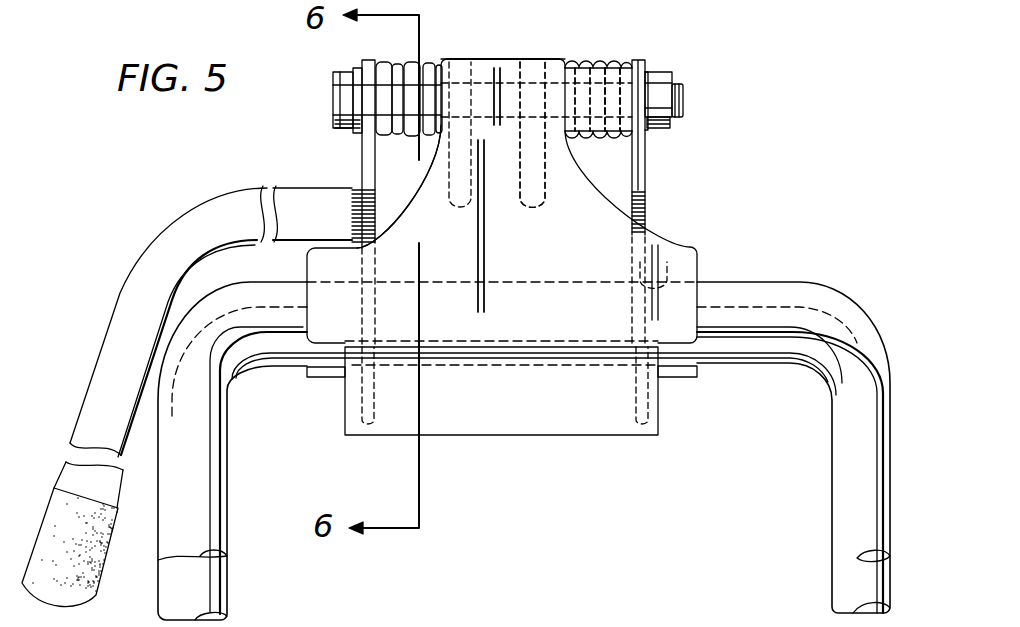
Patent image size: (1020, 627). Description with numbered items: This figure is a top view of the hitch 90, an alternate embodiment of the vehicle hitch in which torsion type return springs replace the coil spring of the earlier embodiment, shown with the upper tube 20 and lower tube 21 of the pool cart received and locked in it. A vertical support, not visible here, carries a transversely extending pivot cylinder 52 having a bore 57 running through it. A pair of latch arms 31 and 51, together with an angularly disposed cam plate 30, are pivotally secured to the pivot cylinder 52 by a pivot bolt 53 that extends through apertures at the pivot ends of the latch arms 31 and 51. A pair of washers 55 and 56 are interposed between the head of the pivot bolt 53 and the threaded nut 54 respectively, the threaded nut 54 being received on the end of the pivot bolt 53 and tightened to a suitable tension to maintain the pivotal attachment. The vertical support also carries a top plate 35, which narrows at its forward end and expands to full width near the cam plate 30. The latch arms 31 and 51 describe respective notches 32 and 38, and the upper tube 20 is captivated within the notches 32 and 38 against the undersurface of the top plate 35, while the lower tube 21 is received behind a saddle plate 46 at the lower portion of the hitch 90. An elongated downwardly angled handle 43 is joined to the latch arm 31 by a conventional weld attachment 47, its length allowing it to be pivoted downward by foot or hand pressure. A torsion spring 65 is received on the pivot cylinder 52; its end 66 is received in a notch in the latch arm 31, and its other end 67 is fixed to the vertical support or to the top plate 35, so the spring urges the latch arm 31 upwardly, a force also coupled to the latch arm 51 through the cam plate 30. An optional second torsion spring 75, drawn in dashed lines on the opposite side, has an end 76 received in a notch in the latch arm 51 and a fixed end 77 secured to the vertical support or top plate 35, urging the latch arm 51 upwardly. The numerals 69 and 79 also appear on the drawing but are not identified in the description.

The upper tube 20 is at (847, 478).
The lower tube 21 is at (847, 573).
The cam plate 30 is at (555, 440).
The latch arm 31 is at (368, 165).
The notch 32 is at (333, 372).
The top plate 35 is at (514, 321).
The notch 38 is at (685, 278).
The handle 43 is at (137, 277).
The saddle plate 46 is at (684, 378).
The weld attachment 47 is at (357, 207).
The latch arm 51 is at (648, 203).
The pivot cylinder 52 is at (612, 62).
The pivot bolt 53 is at (688, 98).
The threaded nut 54 is at (656, 128).
The washer 55 is at (343, 72).
The washer 56 is at (647, 140).
The bore 57 is at (498, 58).
The torsion spring 65 is at (398, 60).
The end 66 is at (387, 207).
The end 67 is at (442, 67).
The bore 69 is at (487, 52).
The second torsion spring 75 is at (600, 63).
The end 76 is at (630, 210).
The fixed end 77 is at (530, 228).
The bore 79 is at (540, 58).
The hitch 90 is at (722, 129).